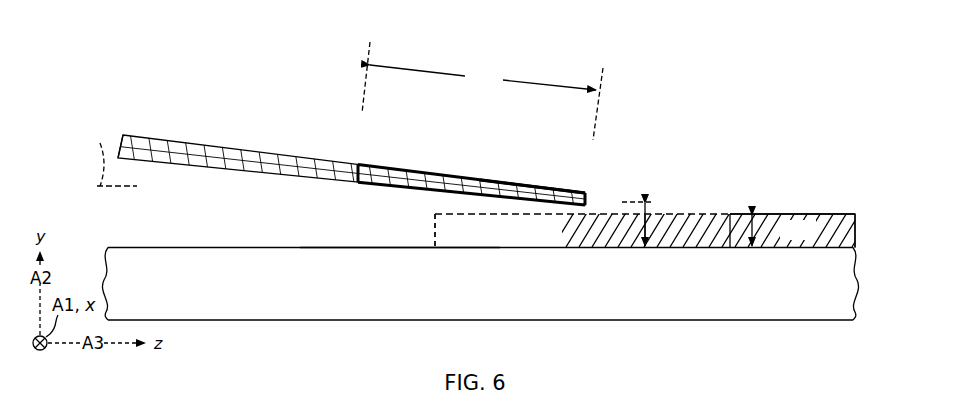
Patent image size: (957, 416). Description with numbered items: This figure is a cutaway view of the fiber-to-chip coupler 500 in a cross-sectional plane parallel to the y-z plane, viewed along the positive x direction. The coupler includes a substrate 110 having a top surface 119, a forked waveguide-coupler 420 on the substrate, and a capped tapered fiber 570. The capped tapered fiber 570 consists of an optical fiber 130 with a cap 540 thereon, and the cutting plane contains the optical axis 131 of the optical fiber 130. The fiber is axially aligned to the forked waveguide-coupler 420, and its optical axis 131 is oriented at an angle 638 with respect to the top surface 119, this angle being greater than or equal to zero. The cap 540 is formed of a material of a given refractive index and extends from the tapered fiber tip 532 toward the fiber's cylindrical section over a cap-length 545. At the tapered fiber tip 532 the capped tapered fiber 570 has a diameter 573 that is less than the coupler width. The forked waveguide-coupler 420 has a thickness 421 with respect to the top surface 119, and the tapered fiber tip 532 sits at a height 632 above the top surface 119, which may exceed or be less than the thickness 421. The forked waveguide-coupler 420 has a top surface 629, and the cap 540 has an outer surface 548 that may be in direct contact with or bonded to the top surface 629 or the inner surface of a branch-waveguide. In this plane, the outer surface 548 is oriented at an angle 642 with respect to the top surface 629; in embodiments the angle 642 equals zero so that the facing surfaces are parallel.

The fiber-to-chip coupler 500 is at (776, 78).
The capped tapered fiber 570 is at (235, 88).
The optical fiber 130 is at (248, 149).
The optical axis 131 is at (111, 142).
The angle 638 is at (97, 163).
The cap-length 545 is at (482, 91).
The cap 540 is at (417, 171).
The outer surface 548 is at (537, 185).
The diameter 573 is at (583, 214).
The tapered fiber tip 532 is at (592, 203).
The top surface 629 is at (703, 213).
The thickness 421 is at (753, 231).
The forked waveguide-coupler 420 is at (792, 231).
The top surface 119 is at (225, 246).
The angle 642 is at (438, 208).
The height 632 is at (646, 232).
The substrate 110 is at (480, 284).